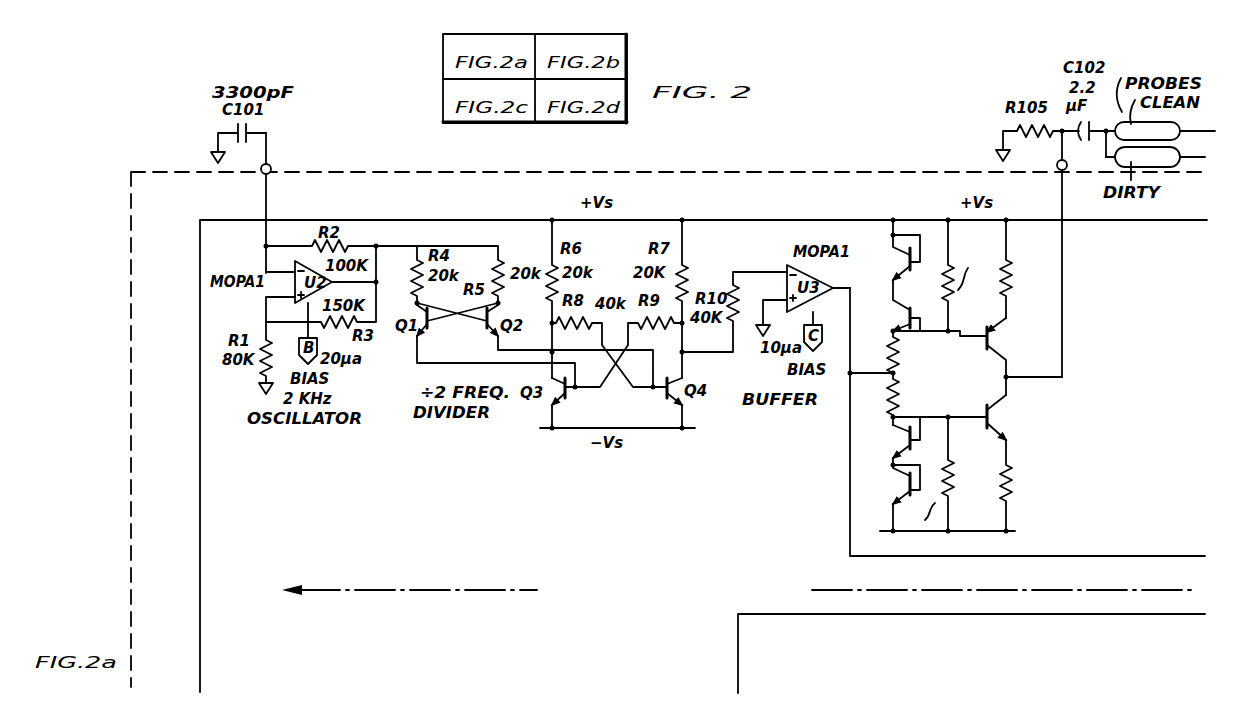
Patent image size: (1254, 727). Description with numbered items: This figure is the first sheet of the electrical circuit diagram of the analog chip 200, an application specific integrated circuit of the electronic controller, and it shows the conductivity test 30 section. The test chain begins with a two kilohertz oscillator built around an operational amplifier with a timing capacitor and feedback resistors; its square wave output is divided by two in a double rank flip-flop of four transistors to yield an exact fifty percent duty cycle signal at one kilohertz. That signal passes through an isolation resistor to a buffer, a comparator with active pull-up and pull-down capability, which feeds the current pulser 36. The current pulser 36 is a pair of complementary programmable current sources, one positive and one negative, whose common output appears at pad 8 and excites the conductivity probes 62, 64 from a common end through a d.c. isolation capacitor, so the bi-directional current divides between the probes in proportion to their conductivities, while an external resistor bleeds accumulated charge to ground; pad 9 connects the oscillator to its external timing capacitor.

The analog chip 200 is at (103, 211).
The node 9 is at (272, 203).
The node 8 is at (1068, 254).
The conductivity probe 62 is at (1172, 122).
The conductivity probe 64 is at (1180, 149).
The current pulser 36 is at (1080, 410).
The conductivity test 30 is at (739, 592).